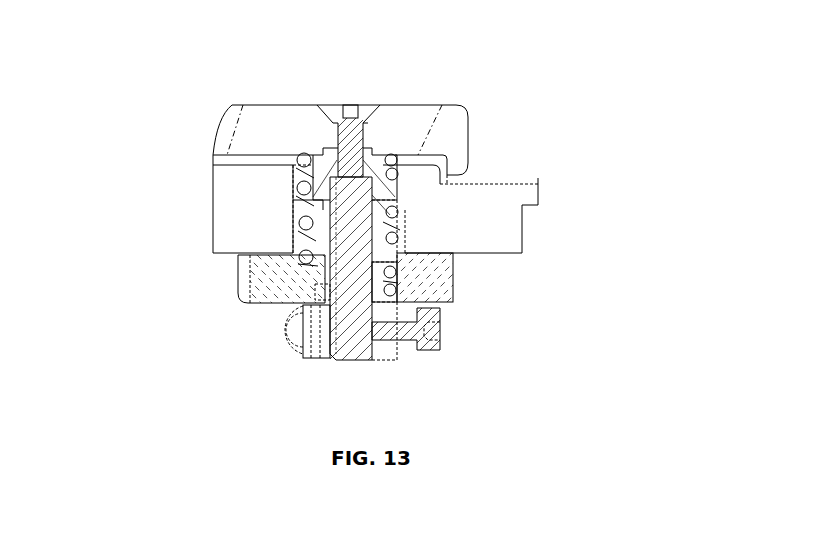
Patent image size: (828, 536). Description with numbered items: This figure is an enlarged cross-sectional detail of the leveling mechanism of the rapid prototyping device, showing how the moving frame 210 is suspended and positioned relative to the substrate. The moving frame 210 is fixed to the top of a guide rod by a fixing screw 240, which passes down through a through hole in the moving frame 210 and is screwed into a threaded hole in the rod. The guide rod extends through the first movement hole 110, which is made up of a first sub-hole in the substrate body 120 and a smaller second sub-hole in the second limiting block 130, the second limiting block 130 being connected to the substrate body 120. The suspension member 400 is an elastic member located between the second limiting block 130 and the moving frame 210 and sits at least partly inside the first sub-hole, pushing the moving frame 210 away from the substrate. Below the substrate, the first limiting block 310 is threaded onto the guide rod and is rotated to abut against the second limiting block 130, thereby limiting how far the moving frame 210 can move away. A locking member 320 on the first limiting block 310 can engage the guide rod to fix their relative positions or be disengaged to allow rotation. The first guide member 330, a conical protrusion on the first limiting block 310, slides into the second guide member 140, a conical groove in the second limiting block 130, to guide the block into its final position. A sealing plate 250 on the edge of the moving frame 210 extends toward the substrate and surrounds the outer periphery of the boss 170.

The first movement hole 110 is at (302, 197).
The substrate body 120 is at (500, 225).
The second limiting block 130 is at (433, 287).
The second guide member 140 is at (322, 288).
The boss 170 is at (425, 175).
The moving frame 210 is at (420, 125).
The fixing screw 240 is at (351, 108).
The sealing plate 250 is at (465, 163).
The first limiting block 310 is at (320, 332).
The locking member 320 is at (428, 343).
The first guide member 330 is at (320, 298).
The suspension member 400 is at (395, 205).